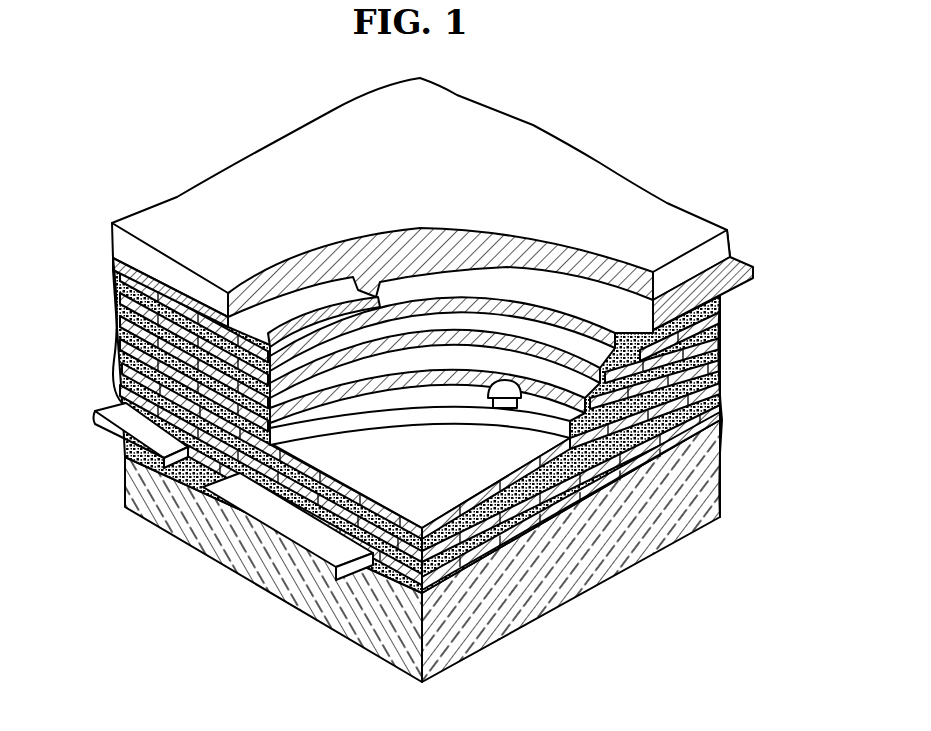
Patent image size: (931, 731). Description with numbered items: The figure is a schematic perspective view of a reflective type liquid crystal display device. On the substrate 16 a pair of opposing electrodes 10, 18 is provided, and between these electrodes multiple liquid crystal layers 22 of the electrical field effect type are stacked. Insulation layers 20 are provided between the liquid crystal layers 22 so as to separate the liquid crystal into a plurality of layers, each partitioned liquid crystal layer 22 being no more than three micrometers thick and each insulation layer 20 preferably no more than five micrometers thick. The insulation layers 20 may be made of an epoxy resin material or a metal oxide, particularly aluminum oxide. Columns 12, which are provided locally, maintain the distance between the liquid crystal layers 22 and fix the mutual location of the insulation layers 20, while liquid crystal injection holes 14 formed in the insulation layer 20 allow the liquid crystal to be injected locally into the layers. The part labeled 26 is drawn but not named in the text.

The electrode 10 is at (112, 268).
The column 12 is at (407, 420).
The liquid crystal injection hole 14 is at (457, 412).
The substrate 16 is at (714, 481).
The electrode 18 is at (93, 411).
The insulation layer 20 is at (722, 304).
The liquid crystal layer 22 is at (722, 334).
The top plate 26 is at (664, 219).